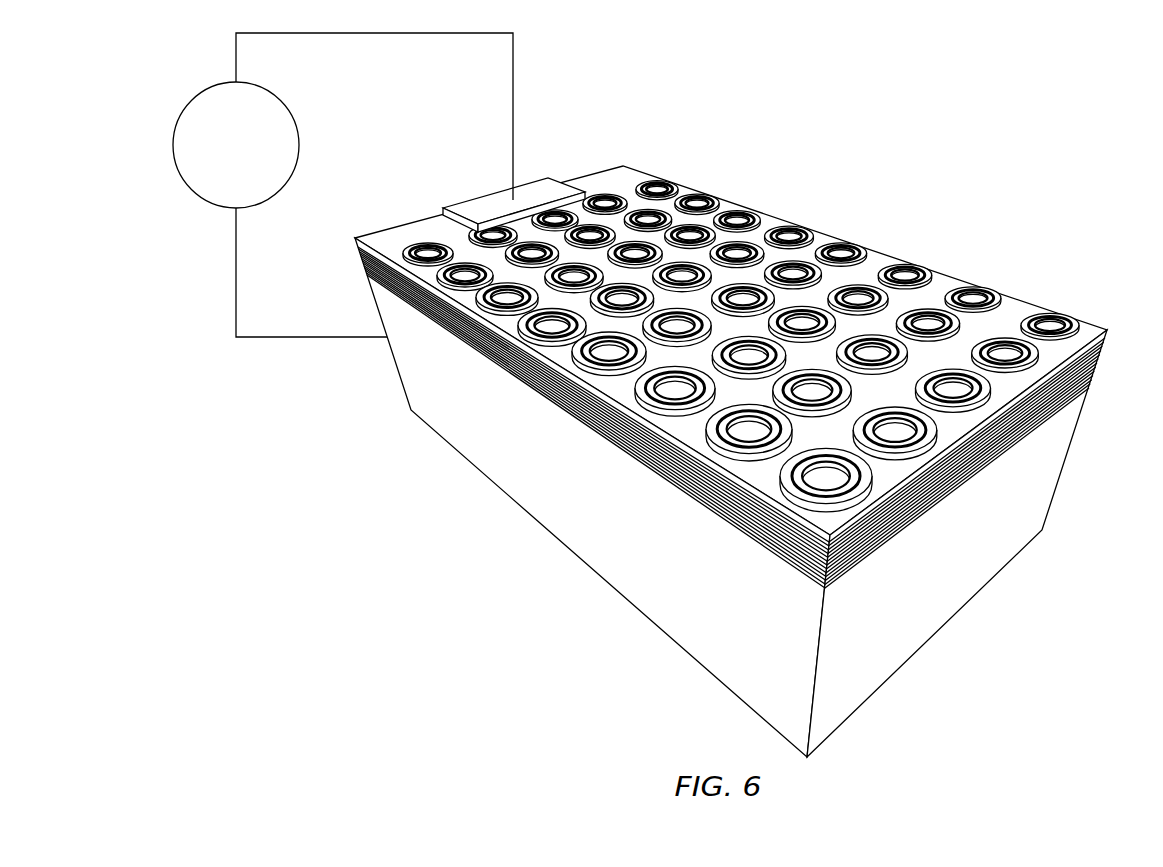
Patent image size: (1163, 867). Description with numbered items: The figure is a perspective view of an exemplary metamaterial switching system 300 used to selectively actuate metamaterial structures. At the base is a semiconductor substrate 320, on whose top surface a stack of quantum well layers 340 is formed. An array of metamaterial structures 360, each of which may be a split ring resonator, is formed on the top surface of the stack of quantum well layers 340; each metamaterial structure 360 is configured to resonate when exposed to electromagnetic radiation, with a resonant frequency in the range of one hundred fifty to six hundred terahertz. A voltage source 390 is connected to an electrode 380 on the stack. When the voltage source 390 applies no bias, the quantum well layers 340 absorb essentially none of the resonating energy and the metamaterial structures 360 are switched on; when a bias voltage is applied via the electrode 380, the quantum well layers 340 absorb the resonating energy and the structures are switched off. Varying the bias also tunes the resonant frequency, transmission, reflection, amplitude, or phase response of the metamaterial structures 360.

The metamaterial switching system 300 is at (753, 416).
The substrate 320 is at (588, 565).
The stack of quantum well layers 340 is at (924, 506).
The metamaterial structure 360 is at (799, 225).
The electrode 380 is at (515, 196).
The voltage source 390 is at (299, 145).